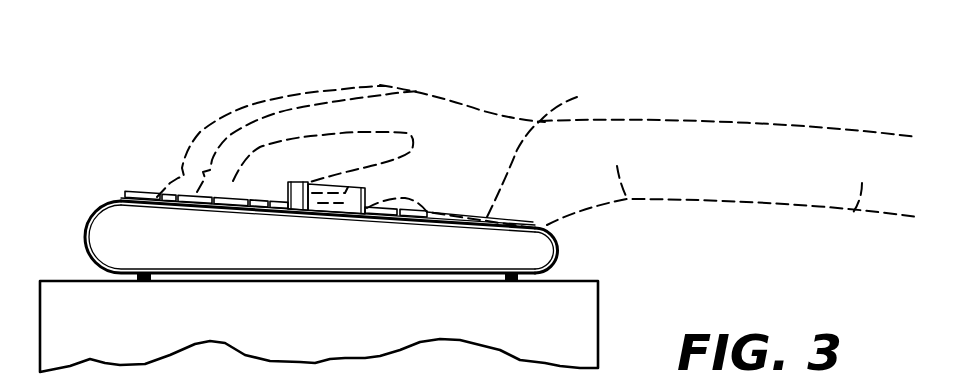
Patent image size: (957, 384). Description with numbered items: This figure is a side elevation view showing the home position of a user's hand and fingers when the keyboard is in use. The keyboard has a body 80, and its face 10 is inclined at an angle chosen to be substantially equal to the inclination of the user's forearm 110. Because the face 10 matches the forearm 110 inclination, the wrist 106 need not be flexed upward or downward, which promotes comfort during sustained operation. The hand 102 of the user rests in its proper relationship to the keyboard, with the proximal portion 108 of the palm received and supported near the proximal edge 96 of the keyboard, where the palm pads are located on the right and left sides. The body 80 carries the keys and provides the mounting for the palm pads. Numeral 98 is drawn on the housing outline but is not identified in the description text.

The face of the keyboard 10 is at (139, 196).
The body of the keyboard 80 is at (117, 237).
The housing 98 is at (106, 203).
The proximal edge of the keyboard 96 is at (560, 256).
The hand of the user 102 is at (380, 85).
The wrist 106 is at (632, 205).
The proximal portion of the palm 108 is at (577, 97).
The forearm 110 is at (852, 214).